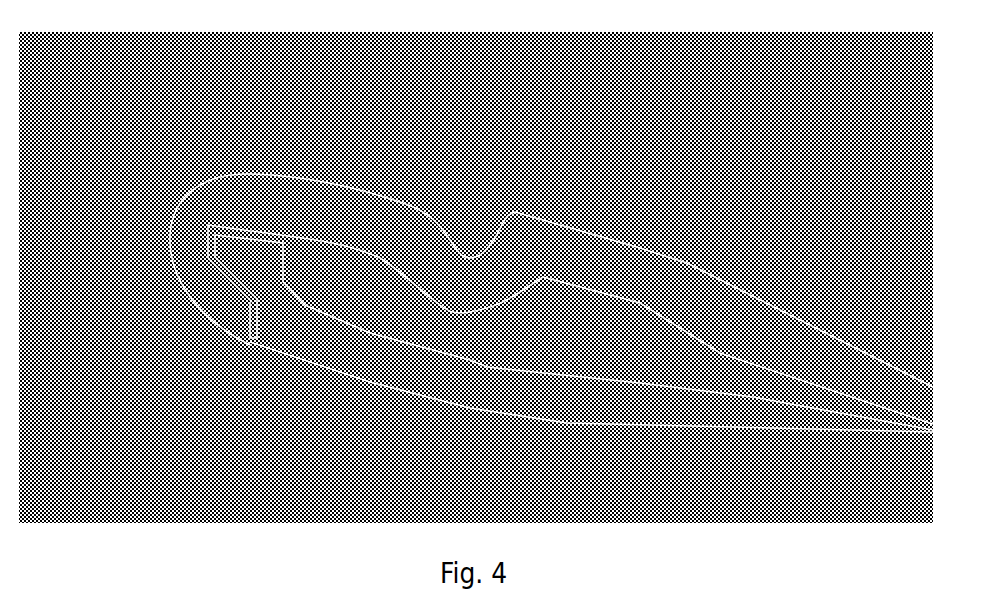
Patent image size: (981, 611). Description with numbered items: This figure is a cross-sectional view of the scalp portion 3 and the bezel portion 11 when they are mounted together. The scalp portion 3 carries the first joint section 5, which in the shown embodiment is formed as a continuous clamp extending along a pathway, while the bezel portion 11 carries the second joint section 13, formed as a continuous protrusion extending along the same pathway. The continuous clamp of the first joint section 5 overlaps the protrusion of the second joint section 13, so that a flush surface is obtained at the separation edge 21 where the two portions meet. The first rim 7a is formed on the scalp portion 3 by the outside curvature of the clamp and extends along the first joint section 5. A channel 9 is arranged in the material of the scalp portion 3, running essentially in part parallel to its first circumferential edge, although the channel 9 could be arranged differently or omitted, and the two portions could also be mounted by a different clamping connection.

The scalp portion 3 is at (612, 258).
The first joint section 5 is at (200, 219).
The first rim 7a is at (163, 204).
The channel 9 is at (480, 213).
The bezel portion 11 is at (523, 386).
The second joint section 13 is at (264, 272).
The separation edge 21 is at (250, 346).